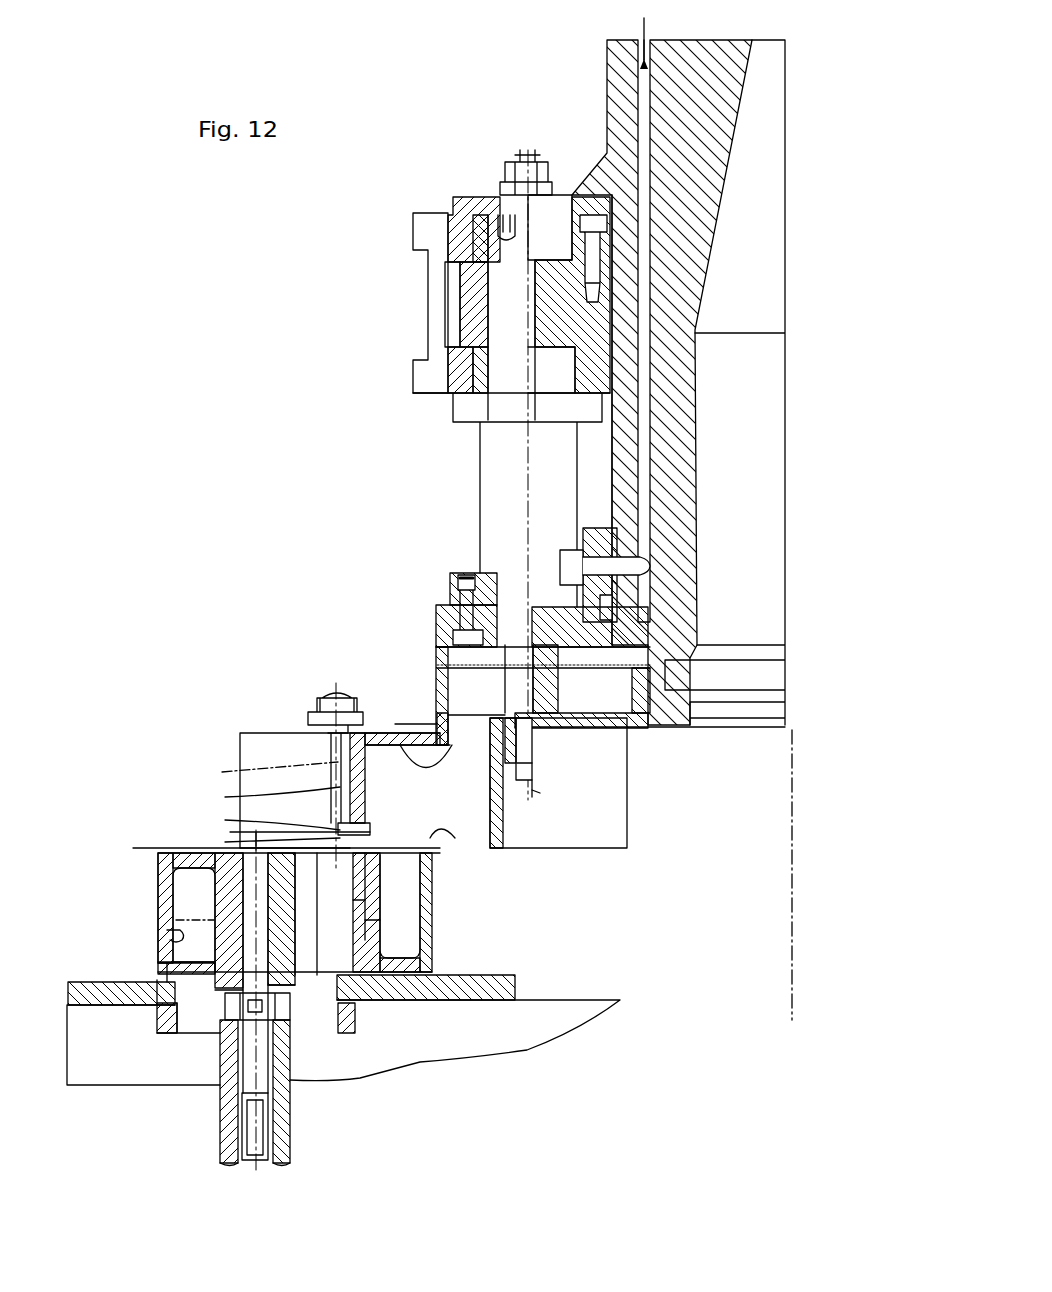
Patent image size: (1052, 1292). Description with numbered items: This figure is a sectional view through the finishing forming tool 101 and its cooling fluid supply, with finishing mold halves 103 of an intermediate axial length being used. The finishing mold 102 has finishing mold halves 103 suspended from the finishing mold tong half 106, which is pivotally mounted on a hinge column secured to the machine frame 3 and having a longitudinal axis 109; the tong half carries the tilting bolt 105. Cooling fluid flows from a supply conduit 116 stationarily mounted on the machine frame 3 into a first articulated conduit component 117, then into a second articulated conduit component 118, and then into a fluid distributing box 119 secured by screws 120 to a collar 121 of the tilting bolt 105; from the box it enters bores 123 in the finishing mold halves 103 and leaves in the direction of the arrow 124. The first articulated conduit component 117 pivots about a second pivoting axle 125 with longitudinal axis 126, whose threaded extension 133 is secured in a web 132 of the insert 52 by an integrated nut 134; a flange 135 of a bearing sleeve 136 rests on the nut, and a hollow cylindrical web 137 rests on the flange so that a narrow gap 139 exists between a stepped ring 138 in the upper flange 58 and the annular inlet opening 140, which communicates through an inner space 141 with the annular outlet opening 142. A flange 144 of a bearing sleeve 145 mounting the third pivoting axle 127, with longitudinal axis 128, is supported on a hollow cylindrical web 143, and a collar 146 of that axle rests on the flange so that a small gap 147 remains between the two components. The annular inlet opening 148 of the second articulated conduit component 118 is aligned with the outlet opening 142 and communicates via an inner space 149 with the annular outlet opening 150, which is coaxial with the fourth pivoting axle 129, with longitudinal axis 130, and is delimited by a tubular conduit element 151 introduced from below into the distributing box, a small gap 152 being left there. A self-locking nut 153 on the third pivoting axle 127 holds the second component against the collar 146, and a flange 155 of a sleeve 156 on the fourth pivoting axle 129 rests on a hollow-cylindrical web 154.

The machine frame 3 is at (80, 1070).
The insert 52 is at (360, 1015).
The upper flange 58 is at (482, 1000).
The finishing forming tool 101 is at (763, 732).
The finishing mold 102 is at (733, 36).
The finishing mold half 103 is at (678, 40).
The tilting bolt 105 is at (497, 336).
The finishing mold tong half 106 is at (447, 244).
The longitudinal axis 109 is at (598, 366).
The supply conduit 116 is at (228, 1008).
The first articulated conduit component 117 is at (156, 860).
The second articulated conduit component 118 is at (238, 740).
The fluid distributing box 119 is at (434, 614).
The screw 120 is at (466, 590).
The collar 121 is at (470, 578).
The bore 123 is at (632, 608).
The arrow 124 is at (636, 30).
The second pivoting axle 125 is at (210, 884).
The longitudinal axis 126 is at (176, 920).
The third pivoting axle 127 is at (265, 797).
The longitudinal axis 128 is at (264, 772).
The fourth pivoting axle 129 is at (524, 760).
The longitudinal axis 130 is at (534, 796).
The web 132 is at (285, 1132).
The threaded extension 133 is at (266, 1112).
The integrated nut 134 is at (300, 1030).
The flange 135 is at (215, 1010).
The bearing sleeve 136 is at (232, 1002).
The hollow cylindrical web 137 is at (170, 934).
The stepped ring 138 is at (160, 1005).
The gap 139 is at (132, 1000).
The inlet opening 140 is at (172, 952).
The inner space 141 is at (195, 900).
The outlet opening 142 is at (425, 878).
The hollow cylindrical web 143 is at (372, 920).
The flange 144 is at (280, 842).
The bearing sleeve 145 is at (360, 901).
The collar 146 is at (265, 819).
The gap 147 is at (137, 872).
The inlet opening 148 is at (448, 838).
The inner space 149 is at (495, 838).
The outlet opening 150 is at (420, 724).
The tubular conduit element 151 is at (440, 688).
The gap 152 is at (423, 723).
The self-locking nut 153 is at (312, 706).
The hollow-cylindrical web 154 is at (503, 822).
The flange 155 is at (497, 722).
The sleeve 156 is at (513, 745).